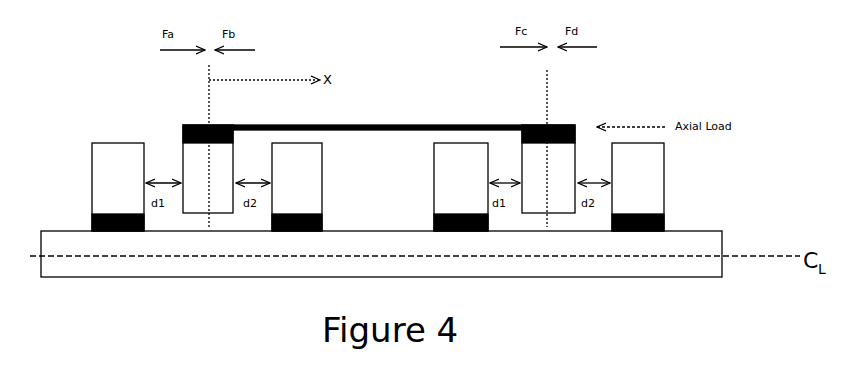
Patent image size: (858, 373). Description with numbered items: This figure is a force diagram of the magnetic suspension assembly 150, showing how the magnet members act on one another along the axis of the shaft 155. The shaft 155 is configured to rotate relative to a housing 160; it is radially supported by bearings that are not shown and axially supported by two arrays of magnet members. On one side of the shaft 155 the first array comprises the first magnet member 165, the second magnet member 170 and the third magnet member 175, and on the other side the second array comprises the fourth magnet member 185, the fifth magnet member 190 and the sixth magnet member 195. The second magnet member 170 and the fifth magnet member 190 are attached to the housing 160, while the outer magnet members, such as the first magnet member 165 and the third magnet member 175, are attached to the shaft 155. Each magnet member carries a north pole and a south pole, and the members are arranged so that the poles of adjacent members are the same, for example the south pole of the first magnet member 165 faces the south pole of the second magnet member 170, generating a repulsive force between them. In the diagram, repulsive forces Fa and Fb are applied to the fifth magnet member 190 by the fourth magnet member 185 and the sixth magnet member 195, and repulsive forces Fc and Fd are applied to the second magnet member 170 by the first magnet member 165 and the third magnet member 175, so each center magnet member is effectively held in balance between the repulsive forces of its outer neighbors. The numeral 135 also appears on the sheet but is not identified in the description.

The magnetic thrust bearing assembly 135 is at (301, 364).
The magnetic suspension assembly 150 is at (838, 58).
The shaft 155 is at (635, 268).
The housing 160 is at (397, 125).
The first magnet member 165 is at (642, 165).
The second magnet member 170 is at (556, 158).
The third magnet member 175 is at (452, 158).
The fourth magnet member 185 is at (298, 165).
The fifth magnet member 190 is at (198, 158).
The sixth magnet member 195 is at (117, 167).